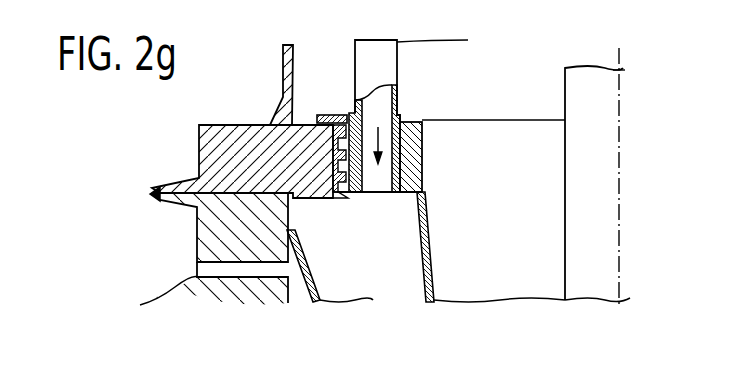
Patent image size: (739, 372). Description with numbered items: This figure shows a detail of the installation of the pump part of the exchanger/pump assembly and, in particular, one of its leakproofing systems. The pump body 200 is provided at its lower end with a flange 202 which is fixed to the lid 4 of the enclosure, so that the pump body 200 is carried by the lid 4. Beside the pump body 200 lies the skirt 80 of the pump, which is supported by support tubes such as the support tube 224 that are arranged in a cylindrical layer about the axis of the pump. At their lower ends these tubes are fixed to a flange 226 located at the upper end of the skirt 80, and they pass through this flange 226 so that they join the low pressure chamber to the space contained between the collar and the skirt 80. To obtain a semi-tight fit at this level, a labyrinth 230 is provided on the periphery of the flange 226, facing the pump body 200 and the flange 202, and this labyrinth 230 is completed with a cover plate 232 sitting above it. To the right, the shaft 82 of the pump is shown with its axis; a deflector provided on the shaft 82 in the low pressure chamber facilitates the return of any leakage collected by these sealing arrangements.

The pump body 200 is at (283, 80).
The flange 202 is at (218, 152).
The lid 4 is at (172, 286).
The cover plate 232 is at (331, 114).
The labyrinth 230 is at (340, 193).
The support tube 224 is at (383, 75).
The flange 226 is at (415, 152).
The skirt 80 is at (427, 258).
The shaft 82 is at (577, 87).